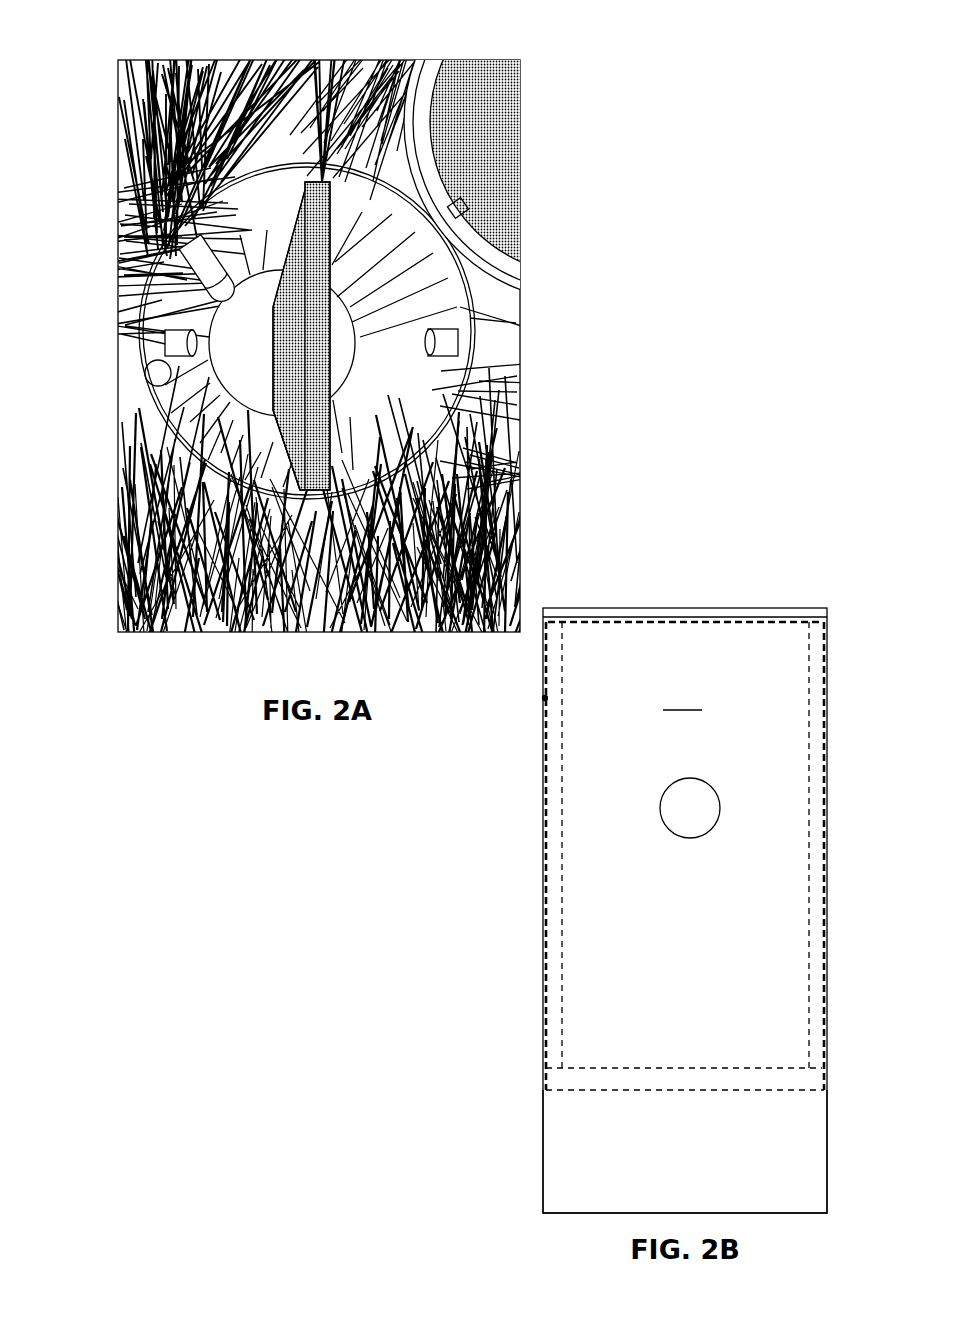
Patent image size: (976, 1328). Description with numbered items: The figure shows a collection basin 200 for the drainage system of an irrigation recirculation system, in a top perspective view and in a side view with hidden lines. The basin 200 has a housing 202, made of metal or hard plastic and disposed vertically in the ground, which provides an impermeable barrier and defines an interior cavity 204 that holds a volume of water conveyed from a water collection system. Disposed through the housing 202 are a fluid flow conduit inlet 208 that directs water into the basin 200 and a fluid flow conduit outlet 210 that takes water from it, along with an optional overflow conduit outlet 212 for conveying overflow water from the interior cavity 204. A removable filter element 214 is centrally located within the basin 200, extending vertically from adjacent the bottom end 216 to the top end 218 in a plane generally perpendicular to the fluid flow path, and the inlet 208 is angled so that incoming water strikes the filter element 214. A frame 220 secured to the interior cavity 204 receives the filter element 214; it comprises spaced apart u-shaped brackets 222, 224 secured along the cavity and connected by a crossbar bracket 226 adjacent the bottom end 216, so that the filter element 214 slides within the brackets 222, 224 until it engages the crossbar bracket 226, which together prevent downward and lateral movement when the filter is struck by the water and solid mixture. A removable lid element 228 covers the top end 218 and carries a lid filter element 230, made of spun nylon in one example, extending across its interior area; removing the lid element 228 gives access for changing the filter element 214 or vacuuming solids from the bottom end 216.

In FIG. 2A, the collection basin 200 is at (112, 267).
In FIG. 2B, the collection basin 200 is at (855, 815).
In FIG. 2A, the housing 202 is at (150, 330).
In FIG. 2B, the housing 202 is at (828, 930).
In FIG. 2A, the interior cavity 204 is at (135, 415).
In FIG. 2B, the interior cavity 204 is at (543, 698).
In FIG. 2A, the fluid flow conduit inlet 208 is at (447, 342).
In FIG. 2B, the fluid flow conduit inlet 208 is at (710, 785).
In FIG. 2A, the fluid flow conduit outlet 210 is at (177, 325).
In FIG. 2A, the overflow conduit outlet 212 is at (120, 250).
In FIG. 2A, the filter element 214 is at (152, 82).
In FIG. 2B, the filter element 214 is at (682, 698).
In FIG. 2B, the bottom end 216 is at (822, 1135).
In FIG. 2B, the top end 218 is at (782, 647).
In FIG. 2A, the frame 220 is at (188, 632).
In FIG. 2B, the frame 220 is at (553, 757).
In FIG. 2A, the bracket 222 is at (313, 492).
In FIG. 2B, the bracket 222 is at (560, 818).
In FIG. 2A, the bracket 224 is at (322, 182).
In FIG. 2B, the bracket 224 is at (808, 747).
In FIG. 2B, the crossbar bracket 226 is at (548, 1090).
In FIG. 2A, the lid element 228 is at (467, 82).
In FIG. 2B, the lid element 228 is at (798, 608).
In FIG. 2A, the lid filter element 230 is at (493, 118).